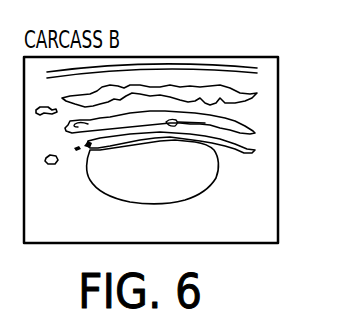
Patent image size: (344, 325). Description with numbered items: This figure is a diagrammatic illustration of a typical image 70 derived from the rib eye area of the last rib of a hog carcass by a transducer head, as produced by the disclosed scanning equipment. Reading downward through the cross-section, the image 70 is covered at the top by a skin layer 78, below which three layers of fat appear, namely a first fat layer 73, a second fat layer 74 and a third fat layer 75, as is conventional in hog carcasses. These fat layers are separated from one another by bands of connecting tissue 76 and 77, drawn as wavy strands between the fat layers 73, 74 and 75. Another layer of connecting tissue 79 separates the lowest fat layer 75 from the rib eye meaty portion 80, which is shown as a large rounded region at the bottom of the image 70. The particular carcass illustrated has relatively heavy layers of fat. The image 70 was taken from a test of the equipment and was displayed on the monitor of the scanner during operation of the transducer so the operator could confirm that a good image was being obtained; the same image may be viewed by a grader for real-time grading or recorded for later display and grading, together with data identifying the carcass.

The image 70 is at (232, 46).
The fat layer 73 is at (259, 81).
The fat layer 74 is at (245, 112).
The fat layer 75 is at (255, 147).
The connecting tissue 76 is at (258, 94).
The connecting tissue 77 is at (247, 125).
The skin layer 78 is at (158, 65).
The connecting tissue 79 is at (254, 150).
The rib eye meaty portion 80 is at (214, 169).